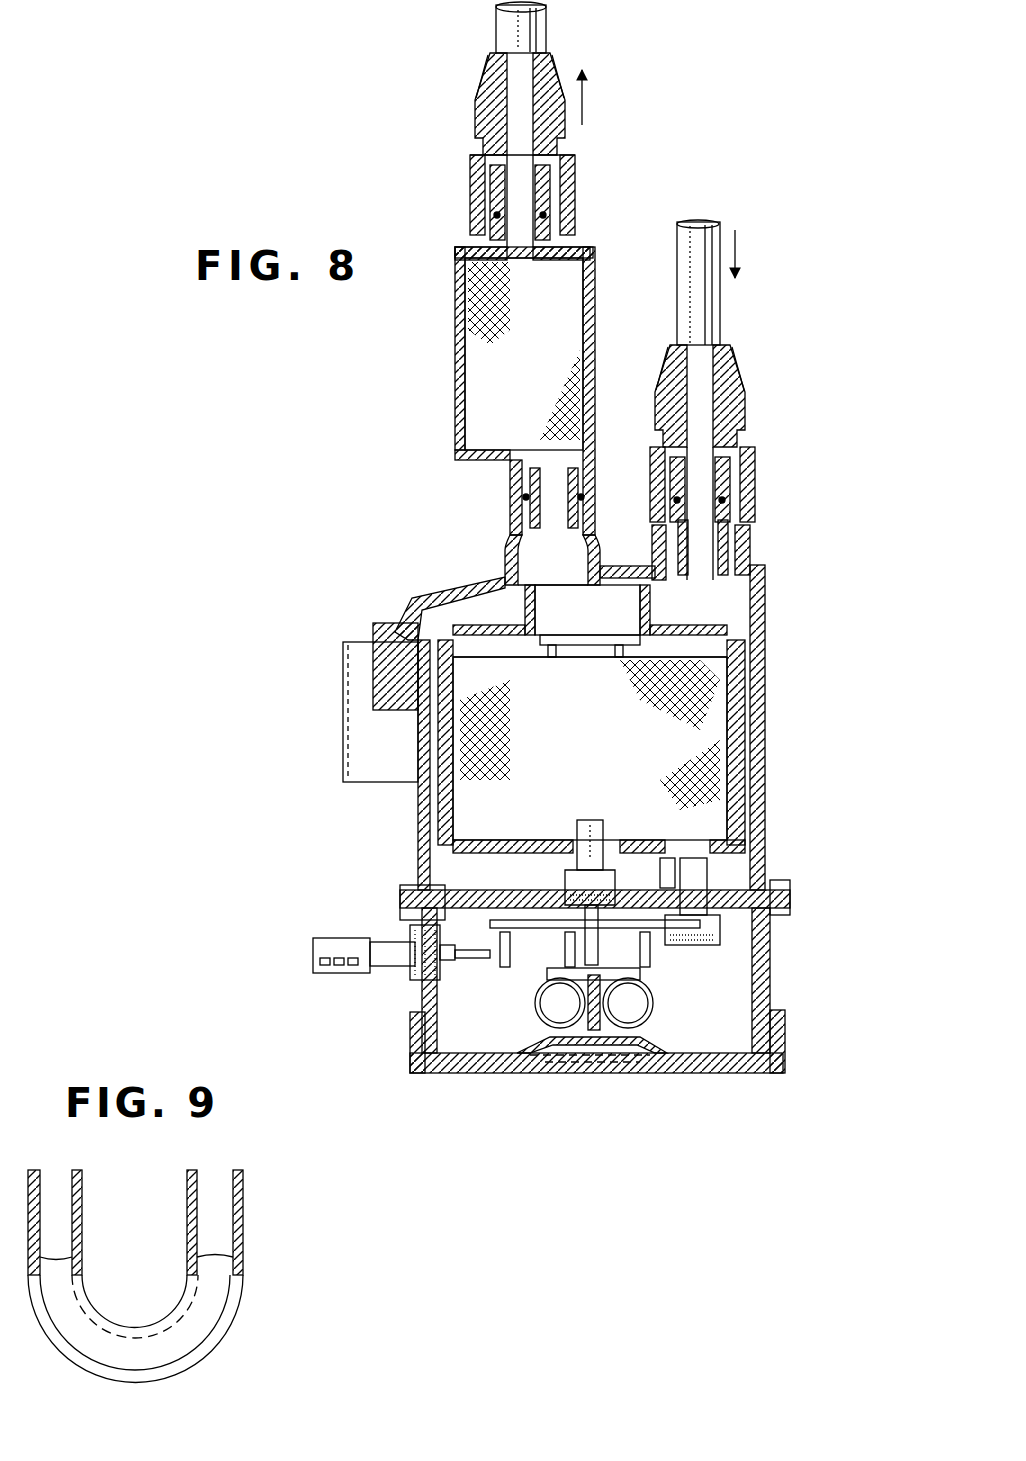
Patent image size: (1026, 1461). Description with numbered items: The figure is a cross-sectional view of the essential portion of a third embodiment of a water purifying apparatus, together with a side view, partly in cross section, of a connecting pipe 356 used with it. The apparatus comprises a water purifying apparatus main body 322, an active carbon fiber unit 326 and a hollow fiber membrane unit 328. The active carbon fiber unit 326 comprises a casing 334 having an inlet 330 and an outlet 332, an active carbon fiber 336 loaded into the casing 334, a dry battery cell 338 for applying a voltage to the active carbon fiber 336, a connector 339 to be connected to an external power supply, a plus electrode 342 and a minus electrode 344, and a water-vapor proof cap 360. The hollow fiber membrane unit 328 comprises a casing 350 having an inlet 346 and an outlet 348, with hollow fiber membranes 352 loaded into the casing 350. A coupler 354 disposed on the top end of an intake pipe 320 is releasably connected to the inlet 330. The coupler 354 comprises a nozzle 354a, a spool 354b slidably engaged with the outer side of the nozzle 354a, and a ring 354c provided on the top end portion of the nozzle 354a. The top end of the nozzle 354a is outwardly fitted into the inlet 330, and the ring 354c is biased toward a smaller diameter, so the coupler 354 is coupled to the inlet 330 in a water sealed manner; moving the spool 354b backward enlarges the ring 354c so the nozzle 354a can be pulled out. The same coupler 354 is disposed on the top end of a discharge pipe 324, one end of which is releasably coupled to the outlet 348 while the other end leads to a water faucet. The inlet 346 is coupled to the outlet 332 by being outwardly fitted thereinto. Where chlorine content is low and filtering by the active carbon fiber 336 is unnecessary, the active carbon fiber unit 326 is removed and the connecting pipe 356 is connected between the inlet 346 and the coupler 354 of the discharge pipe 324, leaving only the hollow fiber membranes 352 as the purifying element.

In FIG. 8, the intake pipe 320 is at (718, 232).
In FIG. 8, the water purifying apparatus main body 322 is at (483, 515).
In FIG. 8, the discharge pipe 324 is at (560, 13).
In FIG. 8, the active carbon fiber unit 326 is at (340, 758).
In FIG. 8, the hollow fiber membrane unit 328 is at (455, 358).
In FIG. 8, the inlet 330 is at (760, 570).
In FIG. 8, the outlet 332 is at (508, 548).
In FIG. 8, the casing 334 is at (762, 640).
In FIG. 8, the active carbon fiber 336 is at (700, 740).
In FIG. 8, the dry battery cell 338 is at (635, 1003).
In FIG. 8, the connector 339 is at (340, 938).
In FIG. 8, the plus electrode 342 is at (590, 820).
In FIG. 8, the minus electrode 344 is at (750, 860).
In FIG. 8, the inlet 346 is at (512, 480).
In FIG. 8, the outlet 348 is at (473, 207).
In FIG. 8, the casing 350 is at (467, 391).
In FIG. 8, the hollow fiber membranes 352 is at (470, 322).
In FIG. 8, the coupler 354 is at (478, 100).
In FIG. 8, the nozzle 354a is at (475, 112).
In FIG. 8, the spool 354b is at (470, 170).
In FIG. 8, the ring 354c is at (560, 200).
In FIG. 9, the connecting pipe 356 is at (218, 1312).
In FIG. 8, the water-vapor proof cap 360 is at (790, 1045).